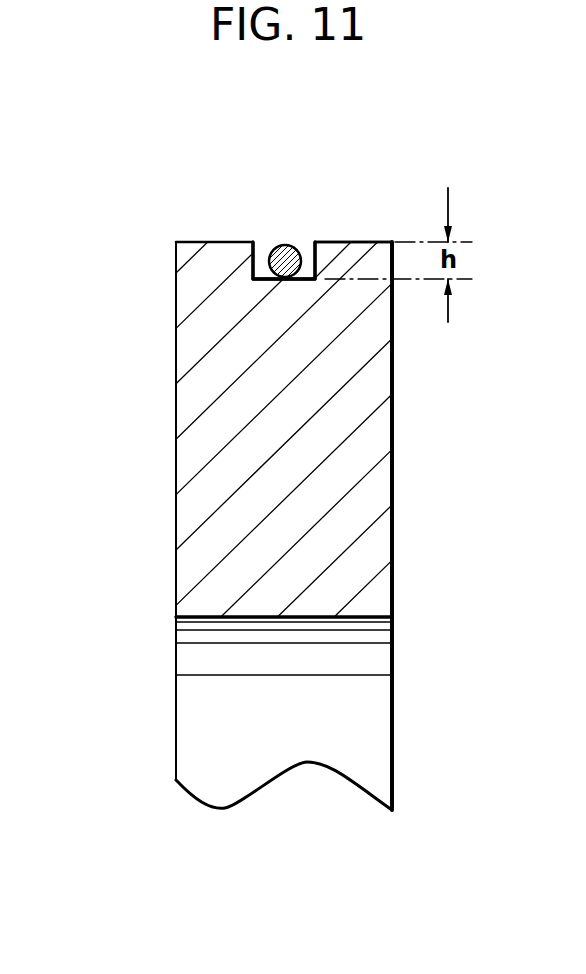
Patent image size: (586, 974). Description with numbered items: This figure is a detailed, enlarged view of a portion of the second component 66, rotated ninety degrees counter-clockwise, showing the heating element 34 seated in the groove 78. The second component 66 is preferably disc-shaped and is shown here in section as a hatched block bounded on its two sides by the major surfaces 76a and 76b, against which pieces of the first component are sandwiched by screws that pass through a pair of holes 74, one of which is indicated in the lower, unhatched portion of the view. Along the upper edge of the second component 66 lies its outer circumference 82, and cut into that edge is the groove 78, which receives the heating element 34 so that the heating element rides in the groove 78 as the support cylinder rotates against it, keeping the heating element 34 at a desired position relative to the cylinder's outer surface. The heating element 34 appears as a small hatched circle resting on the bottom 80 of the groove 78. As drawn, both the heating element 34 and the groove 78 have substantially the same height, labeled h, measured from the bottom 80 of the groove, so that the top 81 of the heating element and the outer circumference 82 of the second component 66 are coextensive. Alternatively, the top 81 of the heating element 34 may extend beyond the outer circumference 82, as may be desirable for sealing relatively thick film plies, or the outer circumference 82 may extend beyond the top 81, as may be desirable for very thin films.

The second component 66 is at (163, 343).
The major surface 76a is at (392, 472).
The major surface 76b is at (176, 469).
The hole 74 is at (367, 707).
The groove 78 is at (264, 236).
The heating element 34 is at (292, 236).
The top of the heating element 81 is at (287, 228).
The bottom of the groove 80 is at (304, 278).
The outer circumference 82 is at (350, 242).